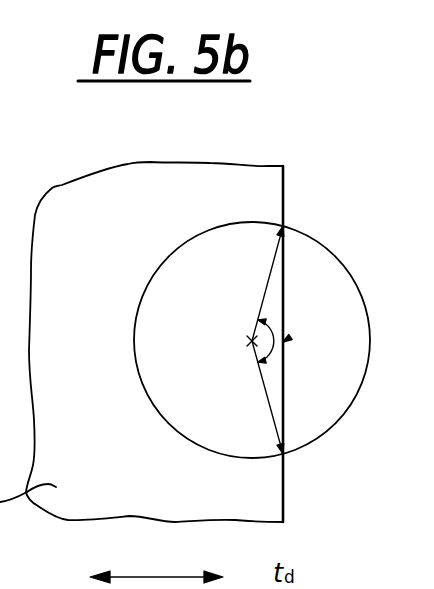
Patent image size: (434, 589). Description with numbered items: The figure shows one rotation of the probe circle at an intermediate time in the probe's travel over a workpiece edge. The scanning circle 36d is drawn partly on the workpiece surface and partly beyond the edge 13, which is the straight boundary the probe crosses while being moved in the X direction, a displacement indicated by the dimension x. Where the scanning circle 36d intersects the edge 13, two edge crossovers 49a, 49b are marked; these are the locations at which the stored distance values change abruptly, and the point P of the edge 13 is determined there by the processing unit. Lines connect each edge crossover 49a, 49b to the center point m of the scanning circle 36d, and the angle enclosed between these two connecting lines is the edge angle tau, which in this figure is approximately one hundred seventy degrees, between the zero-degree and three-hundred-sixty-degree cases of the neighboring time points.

The scanning circle 36d is at (201, 228).
The edge 13 is at (284, 494).
The edge crossover 49a is at (284, 228).
The edge crossover 49b is at (286, 455).
The center point of the scanning circle m is at (247, 341).
The point of the edge P is at (285, 341).
The edge angle tau is at (270, 351).
The distance x is at (156, 565).